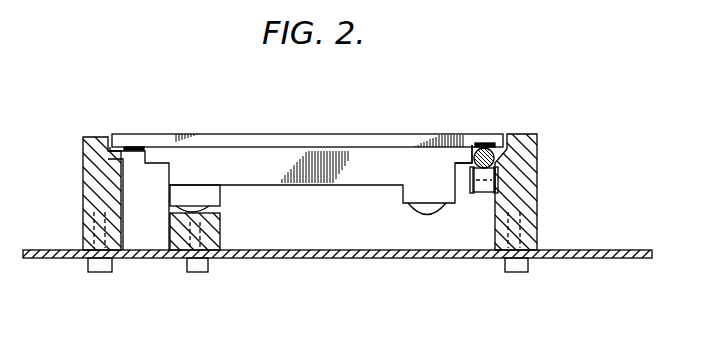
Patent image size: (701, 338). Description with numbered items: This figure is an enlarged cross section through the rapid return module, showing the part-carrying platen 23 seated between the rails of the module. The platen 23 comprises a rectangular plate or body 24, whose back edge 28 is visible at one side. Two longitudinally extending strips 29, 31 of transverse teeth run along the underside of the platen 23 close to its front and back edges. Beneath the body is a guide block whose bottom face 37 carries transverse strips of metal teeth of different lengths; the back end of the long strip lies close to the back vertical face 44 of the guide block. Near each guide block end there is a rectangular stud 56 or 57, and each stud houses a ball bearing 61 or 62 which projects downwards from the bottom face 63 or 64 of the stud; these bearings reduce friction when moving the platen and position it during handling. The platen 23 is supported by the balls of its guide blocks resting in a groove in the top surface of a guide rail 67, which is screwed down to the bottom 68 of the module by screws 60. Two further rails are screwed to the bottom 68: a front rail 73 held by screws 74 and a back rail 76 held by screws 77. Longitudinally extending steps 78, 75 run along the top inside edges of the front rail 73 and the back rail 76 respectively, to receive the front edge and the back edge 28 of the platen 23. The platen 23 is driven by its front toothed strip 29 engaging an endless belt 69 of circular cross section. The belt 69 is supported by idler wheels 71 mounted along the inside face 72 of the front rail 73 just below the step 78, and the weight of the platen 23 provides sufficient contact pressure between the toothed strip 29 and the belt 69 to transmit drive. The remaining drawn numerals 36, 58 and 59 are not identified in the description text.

The part-carrying platen 23 is at (292, 128).
The plate or body 24 is at (352, 140).
The back edge 28 is at (115, 145).
The strip of transverse teeth 29 is at (477, 148).
The strip of transverse teeth 31 is at (136, 147).
The lower surface of cover plate 36 is at (238, 150).
The bottom face 37 is at (300, 187).
The back vertical face 44 is at (148, 157).
The rectangular stud 56 is at (456, 204).
The rectangular stud 57 is at (170, 193).
The contact bracket 58 is at (472, 148).
The body cavity 59 is at (170, 172).
The screws 60 is at (208, 266).
The ball bearing 61 is at (427, 214).
The ball bearing 62 is at (171, 218).
The bottom face 63 is at (404, 208).
The bottom face 64 is at (221, 208).
The guide rail 67 is at (221, 230).
The bottom of the module 68 is at (152, 252).
The endless belt 69 is at (528, 150).
The idler wheels 71 is at (500, 191).
The inside face 72 is at (495, 233).
The front rail 73 is at (531, 164).
The screws 74 is at (528, 268).
The step 75 is at (100, 137).
The back rail 76 is at (85, 192).
The screws 77 is at (88, 266).
The step 78 is at (508, 137).